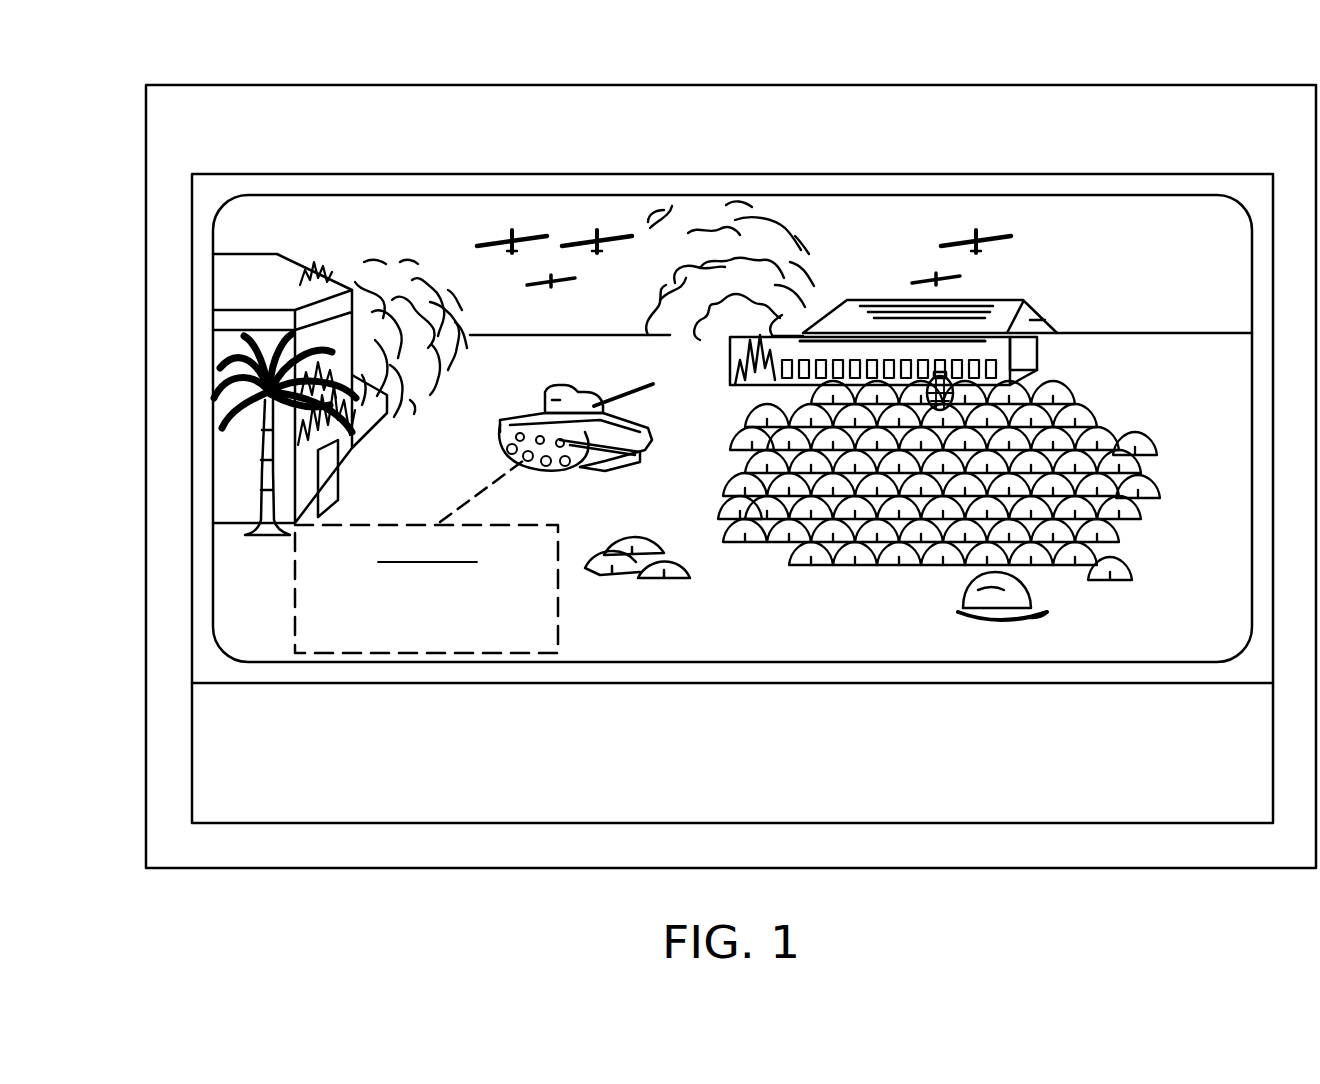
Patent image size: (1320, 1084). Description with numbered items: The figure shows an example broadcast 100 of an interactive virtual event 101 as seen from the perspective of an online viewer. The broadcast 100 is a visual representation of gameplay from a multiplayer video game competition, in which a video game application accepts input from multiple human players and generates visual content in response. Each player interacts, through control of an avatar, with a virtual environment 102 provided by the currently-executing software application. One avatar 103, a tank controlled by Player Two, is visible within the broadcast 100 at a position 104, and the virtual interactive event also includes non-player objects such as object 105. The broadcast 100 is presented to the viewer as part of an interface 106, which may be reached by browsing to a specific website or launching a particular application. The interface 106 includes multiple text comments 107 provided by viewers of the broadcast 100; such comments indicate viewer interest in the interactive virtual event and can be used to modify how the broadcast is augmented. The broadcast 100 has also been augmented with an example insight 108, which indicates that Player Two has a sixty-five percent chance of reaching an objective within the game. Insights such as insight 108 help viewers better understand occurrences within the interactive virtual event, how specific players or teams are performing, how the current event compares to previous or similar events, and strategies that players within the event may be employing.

The broadcast 100 is at (290, 195).
The interactive virtual event 101 is at (424, 146).
The virtual environment 102 is at (277, 229).
The avatar 103 is at (594, 369).
The position 104 is at (540, 412).
The object 105 is at (640, 535).
The interface 106 is at (165, 84).
The text comments 107 is at (249, 823).
The insight 108 is at (342, 525).